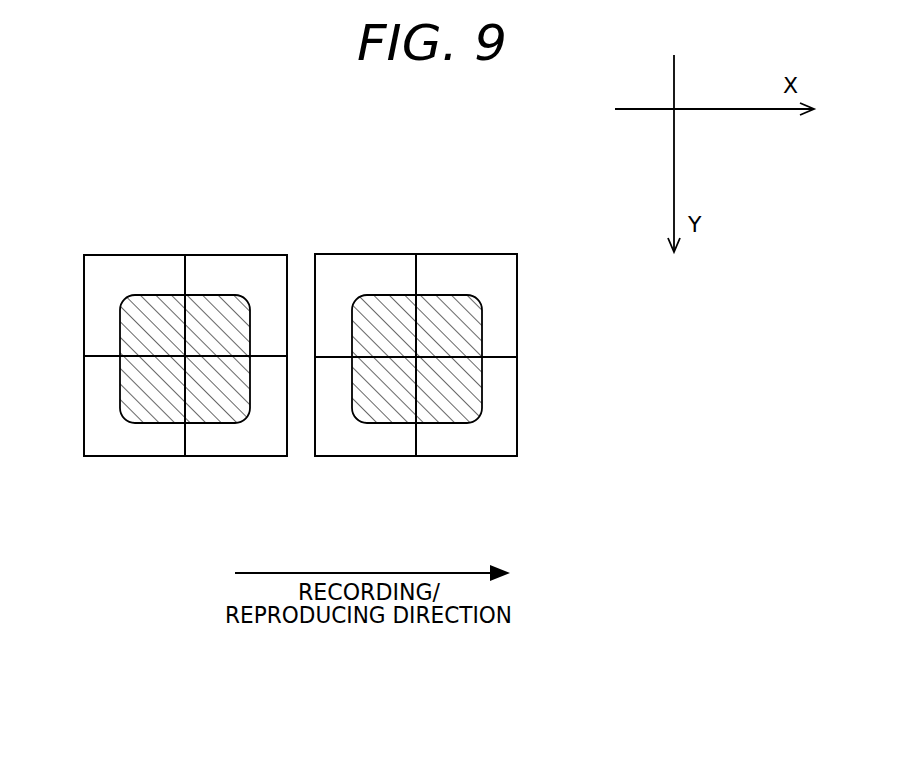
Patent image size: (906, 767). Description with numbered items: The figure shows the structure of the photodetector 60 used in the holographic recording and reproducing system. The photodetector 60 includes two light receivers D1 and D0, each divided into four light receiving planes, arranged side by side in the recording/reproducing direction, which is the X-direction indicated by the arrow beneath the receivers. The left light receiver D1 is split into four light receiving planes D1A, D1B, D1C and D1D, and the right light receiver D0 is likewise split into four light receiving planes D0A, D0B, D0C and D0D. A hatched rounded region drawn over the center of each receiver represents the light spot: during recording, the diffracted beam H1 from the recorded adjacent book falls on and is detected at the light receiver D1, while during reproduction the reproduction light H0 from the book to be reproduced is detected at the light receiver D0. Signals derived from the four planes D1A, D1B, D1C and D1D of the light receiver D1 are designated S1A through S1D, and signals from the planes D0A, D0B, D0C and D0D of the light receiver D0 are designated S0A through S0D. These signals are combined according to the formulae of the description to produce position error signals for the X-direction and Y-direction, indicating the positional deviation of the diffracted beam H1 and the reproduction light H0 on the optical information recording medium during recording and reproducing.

The photodetector 60 is at (315, 149).
The light receiver D1 is at (162, 254).
The light receiving plane D1A is at (260, 268).
The light receiving plane D1B is at (263, 445).
The light receiving plane D1C is at (110, 445).
The light receiving plane D1D is at (105, 268).
The diffracted beam H1 is at (120, 333).
The light receiver D0 is at (397, 253).
The light receiving plane D0A is at (491, 270).
The light receiving plane D0B is at (495, 445).
The light receiving plane D0C is at (340, 445).
The light receiving plane D0D is at (338, 270).
The reproduction light H0 is at (482, 327).